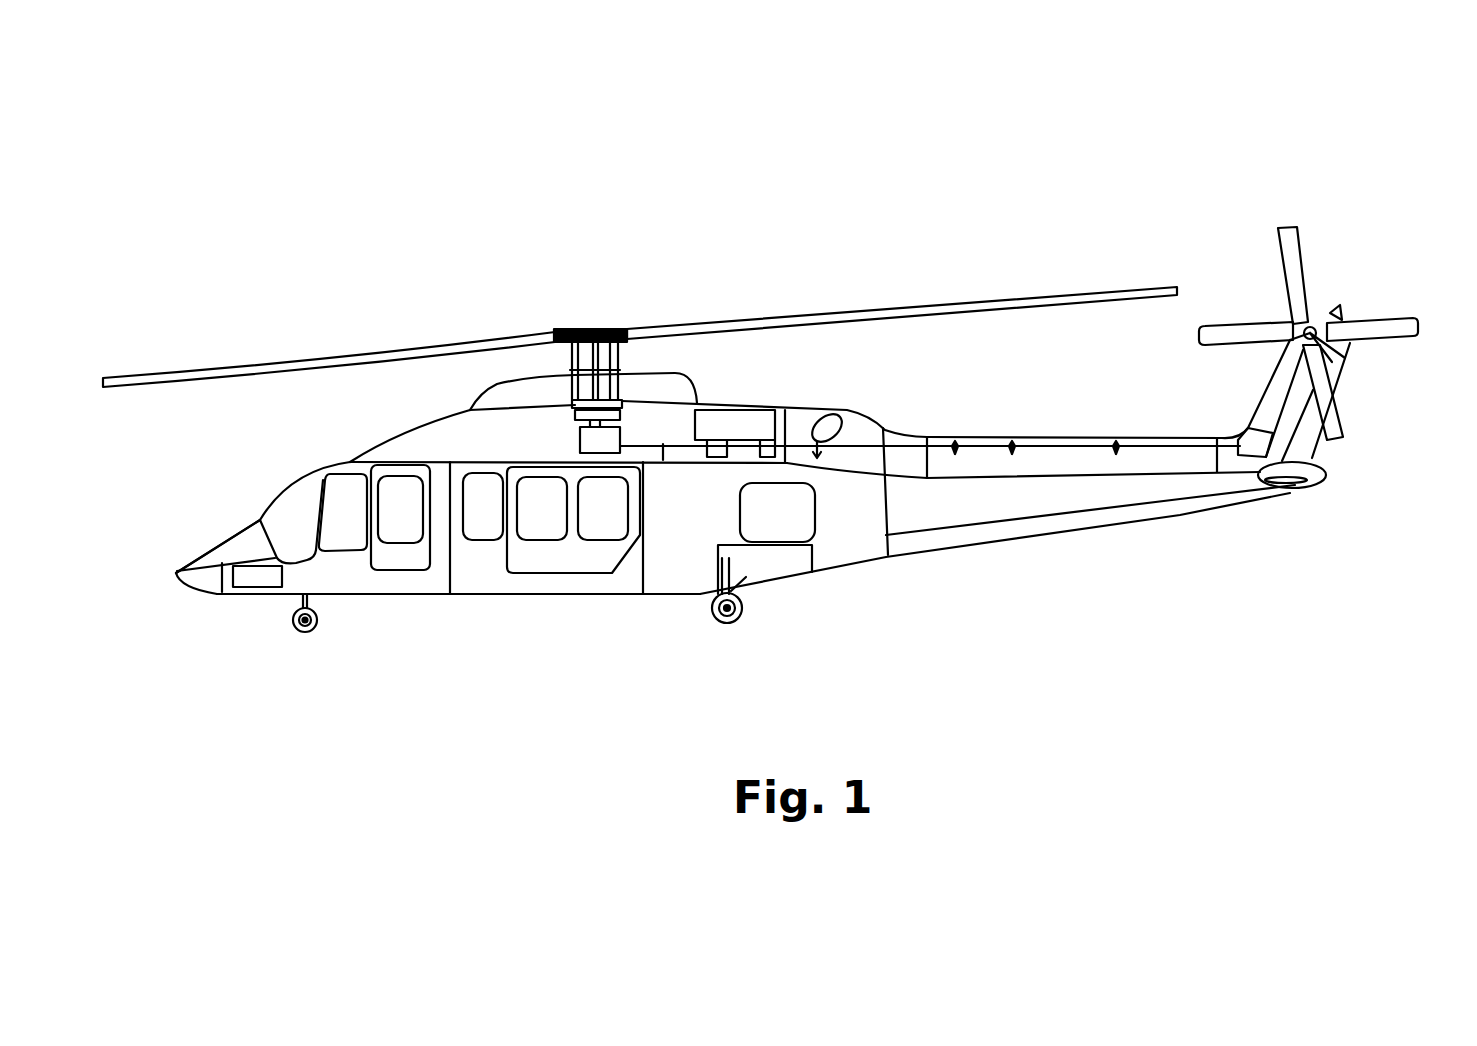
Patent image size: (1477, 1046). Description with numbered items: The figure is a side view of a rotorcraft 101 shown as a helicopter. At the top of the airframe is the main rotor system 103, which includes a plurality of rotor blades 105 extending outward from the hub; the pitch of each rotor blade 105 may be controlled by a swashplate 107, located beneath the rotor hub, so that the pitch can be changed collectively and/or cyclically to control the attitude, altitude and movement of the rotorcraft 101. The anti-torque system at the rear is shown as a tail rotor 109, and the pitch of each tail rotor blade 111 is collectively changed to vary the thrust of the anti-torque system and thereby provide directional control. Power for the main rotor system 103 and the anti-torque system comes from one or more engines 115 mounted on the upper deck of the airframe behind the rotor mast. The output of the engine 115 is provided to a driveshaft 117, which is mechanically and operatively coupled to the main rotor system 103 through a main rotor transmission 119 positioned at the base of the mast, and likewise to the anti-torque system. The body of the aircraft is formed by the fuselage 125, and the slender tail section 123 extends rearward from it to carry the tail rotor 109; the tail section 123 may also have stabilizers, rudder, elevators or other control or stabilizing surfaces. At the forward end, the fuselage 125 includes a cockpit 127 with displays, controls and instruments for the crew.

The rotorcraft 101 is at (415, 156).
The main rotor system 103 is at (620, 302).
The rotor blades 105 is at (1005, 293).
The swashplate 107 is at (623, 400).
The tail rotor 109 is at (1322, 200).
The tail rotor blade 111 is at (1407, 317).
The engines 115 is at (758, 410).
The driveshaft 117 is at (663, 446).
The main rotor transmission 119 is at (580, 437).
The tail section 123 is at (1077, 523).
The fuselage 125 is at (522, 596).
The cockpit 127 is at (270, 502).